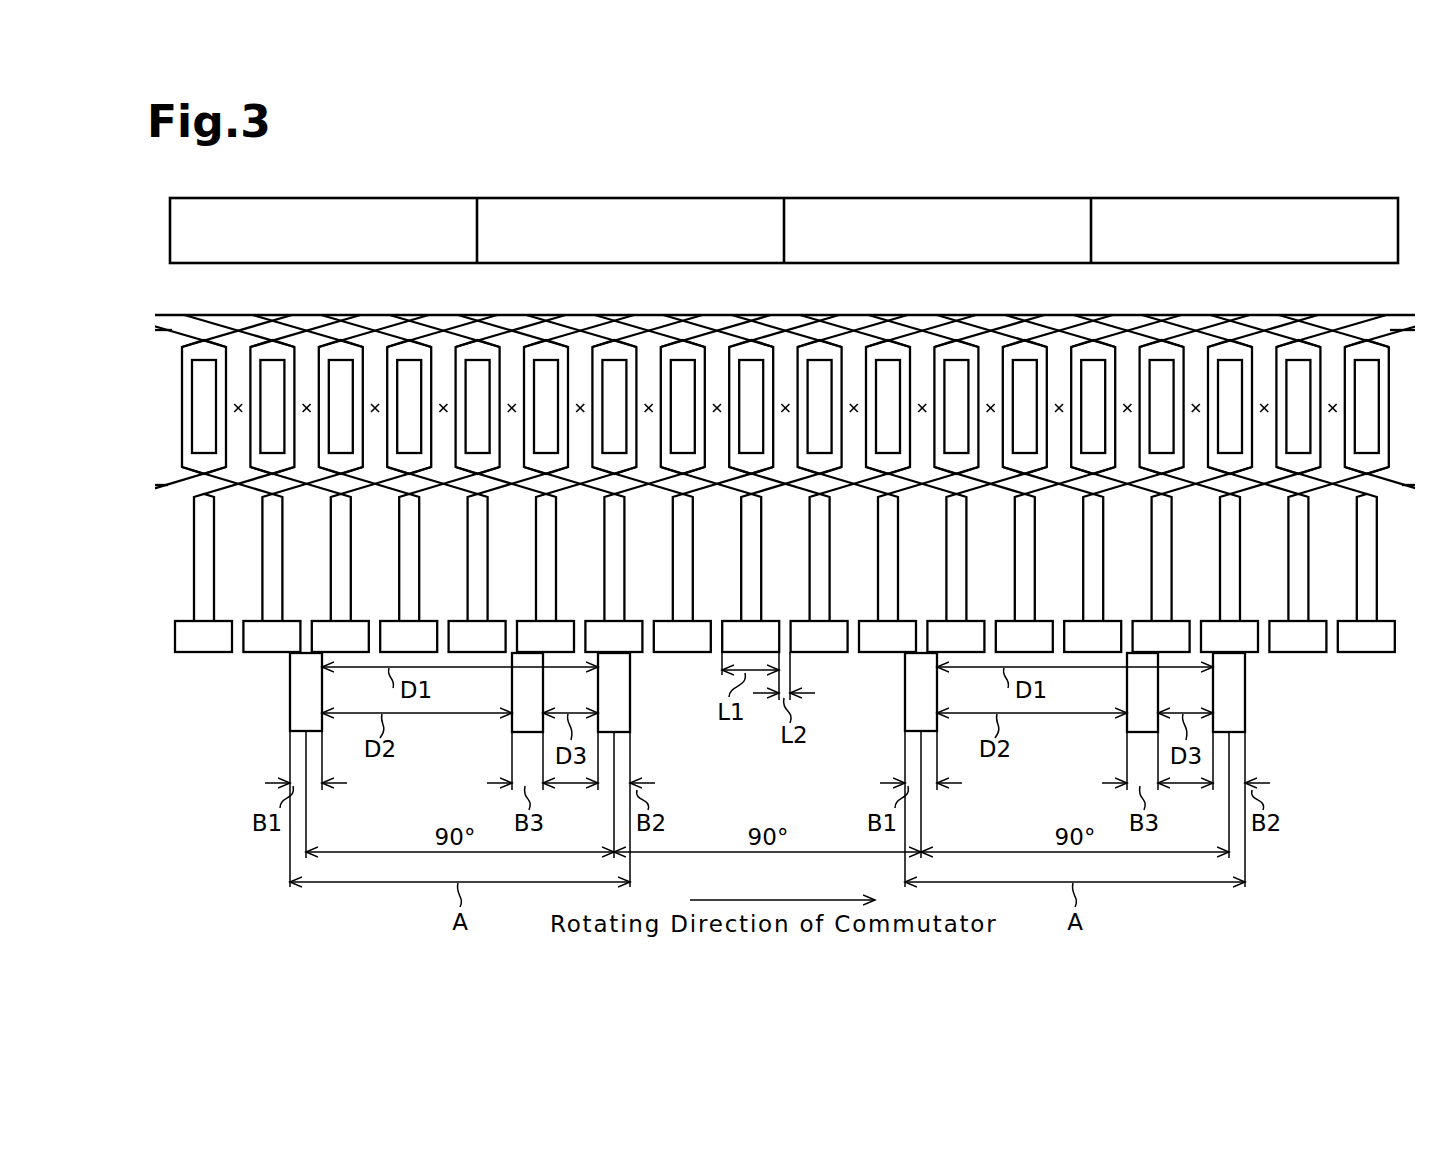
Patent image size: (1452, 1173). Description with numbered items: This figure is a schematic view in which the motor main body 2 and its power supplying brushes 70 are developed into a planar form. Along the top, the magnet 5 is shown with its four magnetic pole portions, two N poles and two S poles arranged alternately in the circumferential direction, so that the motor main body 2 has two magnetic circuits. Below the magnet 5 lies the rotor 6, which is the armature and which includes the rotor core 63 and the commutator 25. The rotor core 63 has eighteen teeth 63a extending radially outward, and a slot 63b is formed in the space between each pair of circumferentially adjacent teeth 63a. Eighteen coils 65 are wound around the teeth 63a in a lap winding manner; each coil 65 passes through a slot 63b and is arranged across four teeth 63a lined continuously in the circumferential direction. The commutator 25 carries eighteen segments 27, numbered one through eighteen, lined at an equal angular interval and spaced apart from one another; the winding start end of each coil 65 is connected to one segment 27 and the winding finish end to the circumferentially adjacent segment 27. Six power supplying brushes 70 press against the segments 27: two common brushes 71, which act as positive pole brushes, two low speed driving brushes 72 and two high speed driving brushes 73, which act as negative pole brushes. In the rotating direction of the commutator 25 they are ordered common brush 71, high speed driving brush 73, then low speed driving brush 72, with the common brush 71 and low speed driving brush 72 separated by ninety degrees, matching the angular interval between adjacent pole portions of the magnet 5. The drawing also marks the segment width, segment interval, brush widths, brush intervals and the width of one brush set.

The motor main body 2 is at (1298, 174).
The magnet 5 is at (444, 198).
The rotor 6 is at (1298, 315).
The commutator 25 is at (1372, 654).
The segment 27 is at (785, 614).
The rotor core 63 is at (1389, 393).
The teeth 63a is at (785, 383).
The slot 63b is at (785, 468).
The coil 65 is at (751, 293).
The power supplying brush 70 is at (769, 715).
The common brush 71 is at (290, 703).
The low speed driving brush 72 is at (630, 703).
The high speed driving brush 73 is at (512, 727).